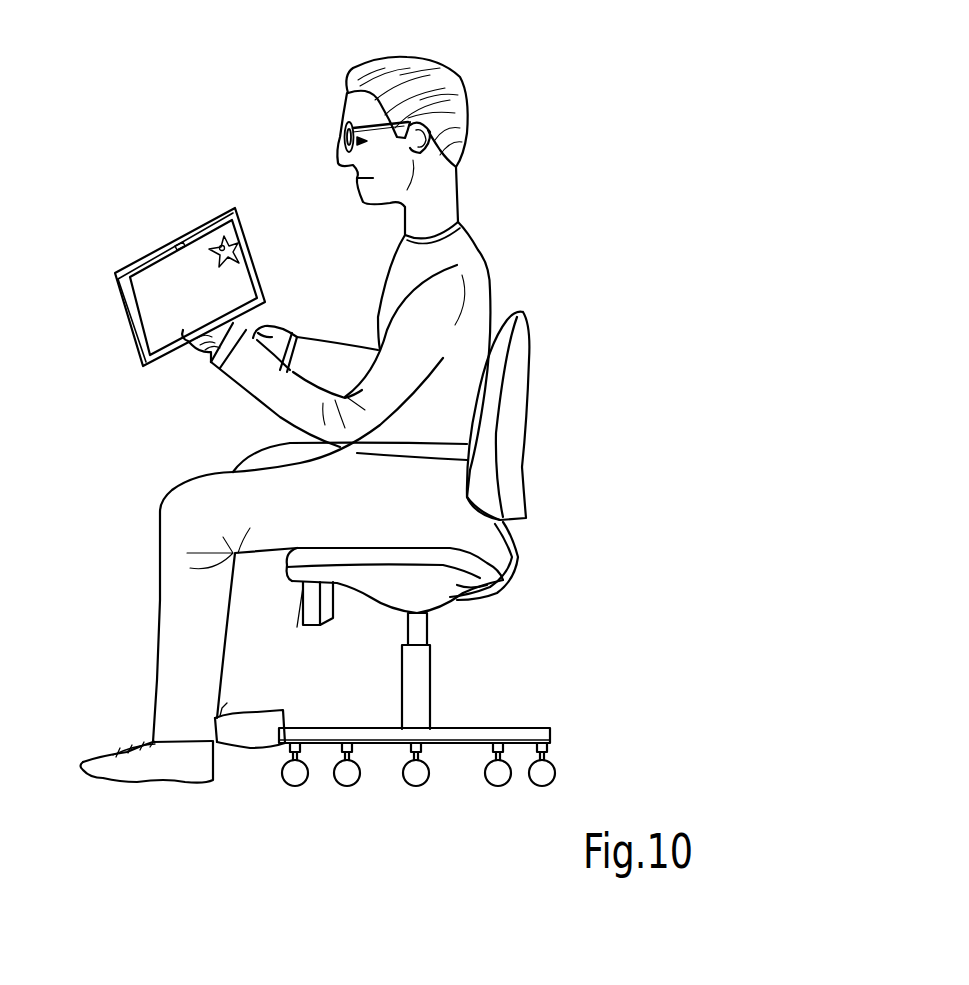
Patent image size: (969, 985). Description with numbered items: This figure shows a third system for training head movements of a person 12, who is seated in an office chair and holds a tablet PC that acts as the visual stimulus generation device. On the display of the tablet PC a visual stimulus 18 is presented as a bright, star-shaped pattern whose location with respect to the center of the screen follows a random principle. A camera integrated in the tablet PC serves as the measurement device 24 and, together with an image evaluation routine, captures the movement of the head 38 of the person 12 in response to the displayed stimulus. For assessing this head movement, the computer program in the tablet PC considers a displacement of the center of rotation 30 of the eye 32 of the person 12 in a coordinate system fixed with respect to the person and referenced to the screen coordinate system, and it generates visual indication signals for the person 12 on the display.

The person 12 is at (467, 253).
The visual stimulus 18 is at (224, 238).
The measurement device 24 is at (177, 243).
The center of rotation 30 is at (345, 130).
The eye 32 is at (366, 137).
The head 38 is at (427, 60).